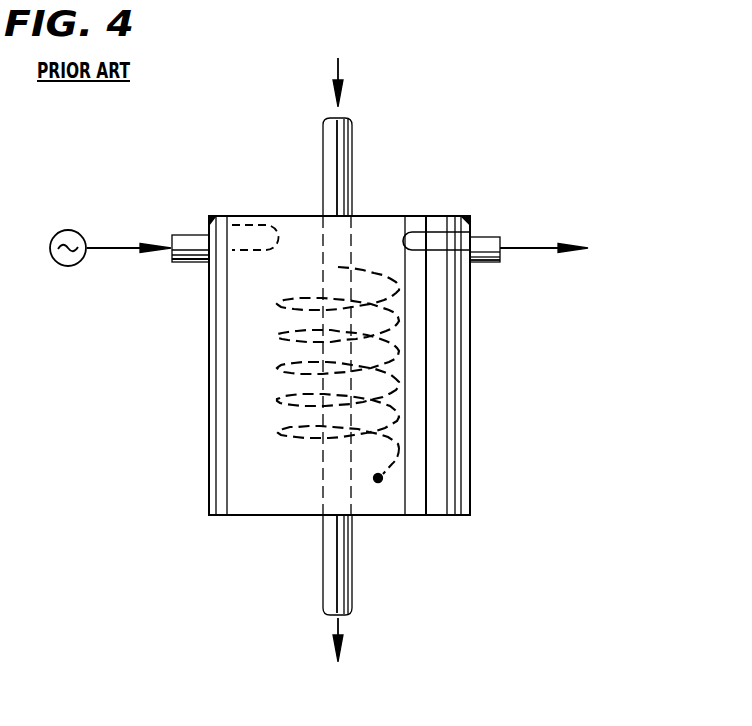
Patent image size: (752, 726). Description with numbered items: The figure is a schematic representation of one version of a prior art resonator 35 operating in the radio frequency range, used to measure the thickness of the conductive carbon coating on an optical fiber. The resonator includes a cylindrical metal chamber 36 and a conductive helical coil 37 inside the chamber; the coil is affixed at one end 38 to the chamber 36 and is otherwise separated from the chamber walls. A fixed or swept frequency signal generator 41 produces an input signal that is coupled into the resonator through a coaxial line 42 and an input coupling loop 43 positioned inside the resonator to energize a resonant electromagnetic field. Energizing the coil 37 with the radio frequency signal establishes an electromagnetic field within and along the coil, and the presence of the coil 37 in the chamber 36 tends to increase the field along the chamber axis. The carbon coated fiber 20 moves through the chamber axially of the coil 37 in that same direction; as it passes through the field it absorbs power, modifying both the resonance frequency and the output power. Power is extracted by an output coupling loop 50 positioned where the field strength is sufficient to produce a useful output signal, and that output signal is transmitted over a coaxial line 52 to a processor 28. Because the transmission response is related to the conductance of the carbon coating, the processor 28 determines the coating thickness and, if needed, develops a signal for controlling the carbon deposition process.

The prior art resonator 35 is at (196, 92).
The cylindrical metal chamber 36 is at (470, 322).
The input coupling loop 43 is at (245, 216).
The output coupling loop 50 is at (432, 215).
The carbon coated fiber 20 is at (352, 148).
The conductive helical coil 37 is at (400, 408).
The coil end 38 is at (382, 482).
The signal generator 41 is at (58, 232).
The coaxial line 42 is at (112, 252).
The coaxial line 52 is at (533, 245).
The processor 28 is at (632, 249).